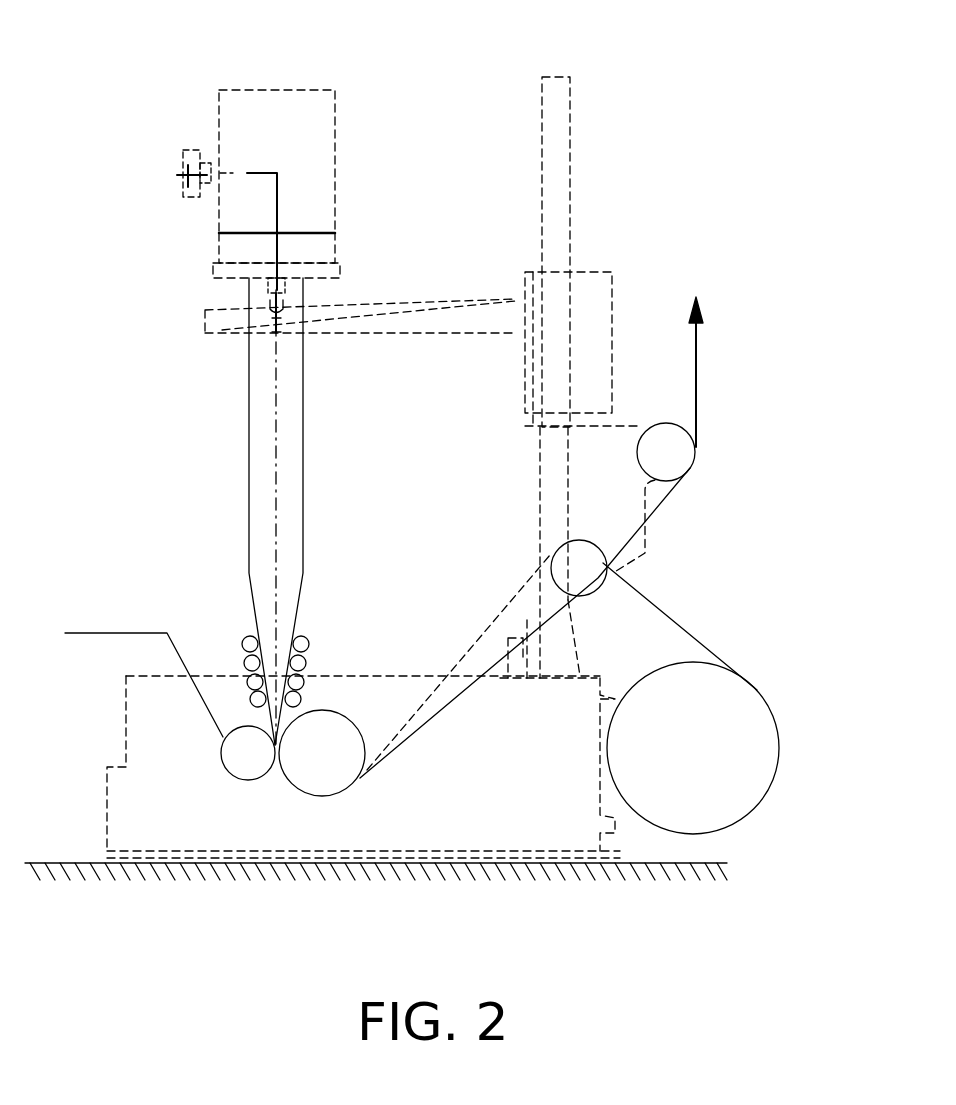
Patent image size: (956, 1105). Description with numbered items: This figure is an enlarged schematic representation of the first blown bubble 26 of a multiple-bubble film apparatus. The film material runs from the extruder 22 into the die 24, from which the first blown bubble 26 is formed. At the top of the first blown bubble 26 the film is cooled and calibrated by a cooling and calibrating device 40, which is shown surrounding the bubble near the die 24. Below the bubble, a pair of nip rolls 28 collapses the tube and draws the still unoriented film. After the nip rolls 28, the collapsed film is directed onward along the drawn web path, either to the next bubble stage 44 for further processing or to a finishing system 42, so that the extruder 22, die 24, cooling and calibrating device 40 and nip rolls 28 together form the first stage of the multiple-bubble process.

The extruder 22 is at (140, 176).
The die 24 is at (260, 127).
The first blown bubble 26 is at (342, 446).
The nip rolls 28 is at (245, 770).
The cooling and calibrating device 40 is at (275, 338).
The finishing system 42 is at (745, 703).
The next bubble stage 44 is at (696, 345).